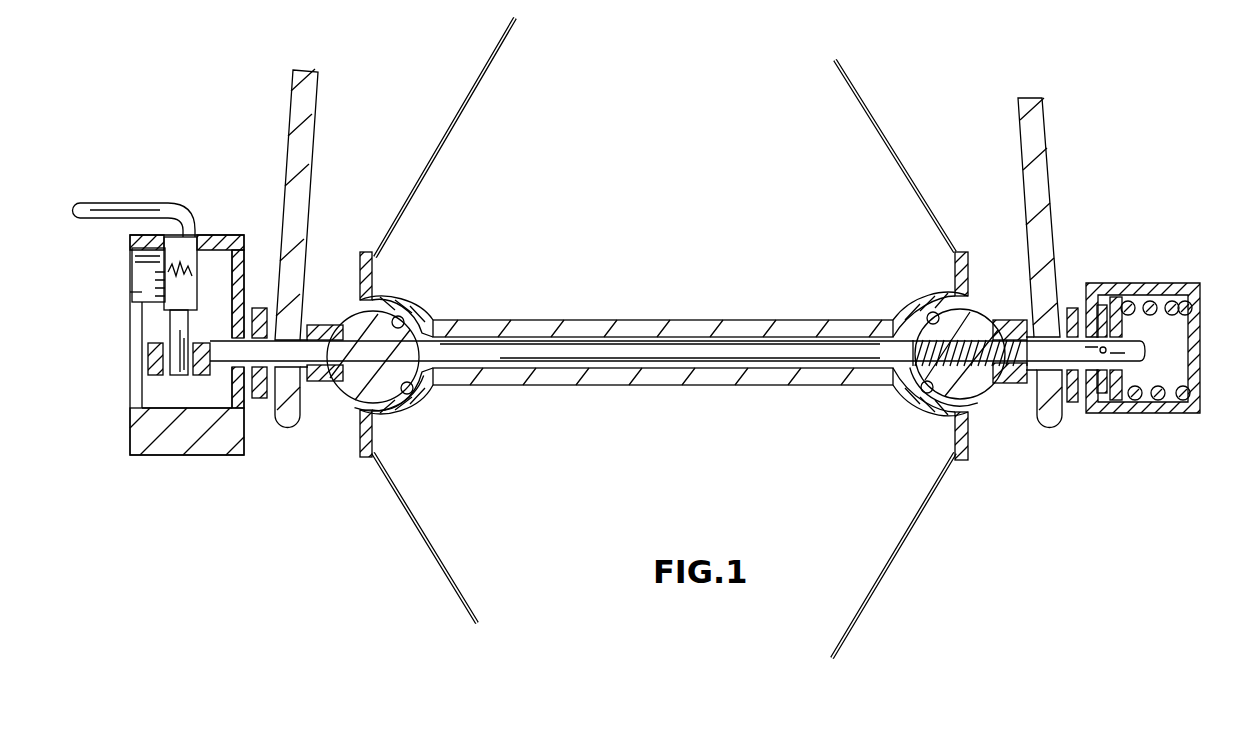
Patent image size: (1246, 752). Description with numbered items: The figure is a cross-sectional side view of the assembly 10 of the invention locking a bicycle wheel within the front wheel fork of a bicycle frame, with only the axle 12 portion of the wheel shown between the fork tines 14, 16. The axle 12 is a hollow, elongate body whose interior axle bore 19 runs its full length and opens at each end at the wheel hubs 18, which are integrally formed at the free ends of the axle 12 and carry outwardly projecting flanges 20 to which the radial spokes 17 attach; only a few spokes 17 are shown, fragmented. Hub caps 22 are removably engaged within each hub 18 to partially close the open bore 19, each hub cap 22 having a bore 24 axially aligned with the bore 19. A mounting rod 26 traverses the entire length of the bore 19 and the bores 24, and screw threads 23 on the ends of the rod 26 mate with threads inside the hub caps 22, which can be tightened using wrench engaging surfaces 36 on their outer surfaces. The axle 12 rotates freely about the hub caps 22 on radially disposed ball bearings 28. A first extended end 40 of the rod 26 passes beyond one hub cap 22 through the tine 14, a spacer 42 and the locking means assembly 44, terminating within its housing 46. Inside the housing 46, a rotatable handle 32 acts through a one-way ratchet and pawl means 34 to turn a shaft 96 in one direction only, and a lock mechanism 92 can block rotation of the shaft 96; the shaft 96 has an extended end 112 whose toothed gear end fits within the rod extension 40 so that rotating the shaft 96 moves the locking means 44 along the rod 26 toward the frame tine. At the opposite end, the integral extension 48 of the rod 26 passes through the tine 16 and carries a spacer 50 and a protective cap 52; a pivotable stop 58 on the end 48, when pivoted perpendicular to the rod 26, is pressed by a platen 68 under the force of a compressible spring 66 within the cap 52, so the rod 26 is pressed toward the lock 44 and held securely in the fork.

The assembly 10 is at (128, 90).
The axle 12 is at (637, 325).
The front wheel fork tine 14 is at (316, 80).
The front wheel fork tine 16 is at (1020, 117).
The spokes 17 is at (462, 118).
The wheel hubs 18 is at (400, 305).
The axle bore 19 is at (615, 367).
The flanges 20 is at (373, 277).
The hub caps 22 is at (350, 395).
The screw threads 23 is at (395, 408).
The bore 24 is at (303, 380).
The mounting rod 26 is at (705, 350).
The ball bearings 28 is at (412, 390).
The rotatable handle 32 is at (157, 207).
The ratchet and pawl means 34 is at (185, 268).
The wrench engaging surfaces 36 is at (325, 323).
The first extended end 40 is at (203, 376).
The spacer 42 is at (258, 398).
The locking means assembly 44 is at (130, 292).
The housing 46 is at (130, 383).
The second extended end 48 is at (1135, 350).
The spacer 50 is at (1072, 307).
The protective cap 52 is at (1200, 320).
The pivotable stop 58 is at (1102, 305).
The compressible spring 66 is at (1182, 400).
The platen 68 is at (1118, 297).
The lock mechanism 92 is at (142, 275).
The shaft 96 is at (187, 296).
The extended end 112 is at (178, 348).